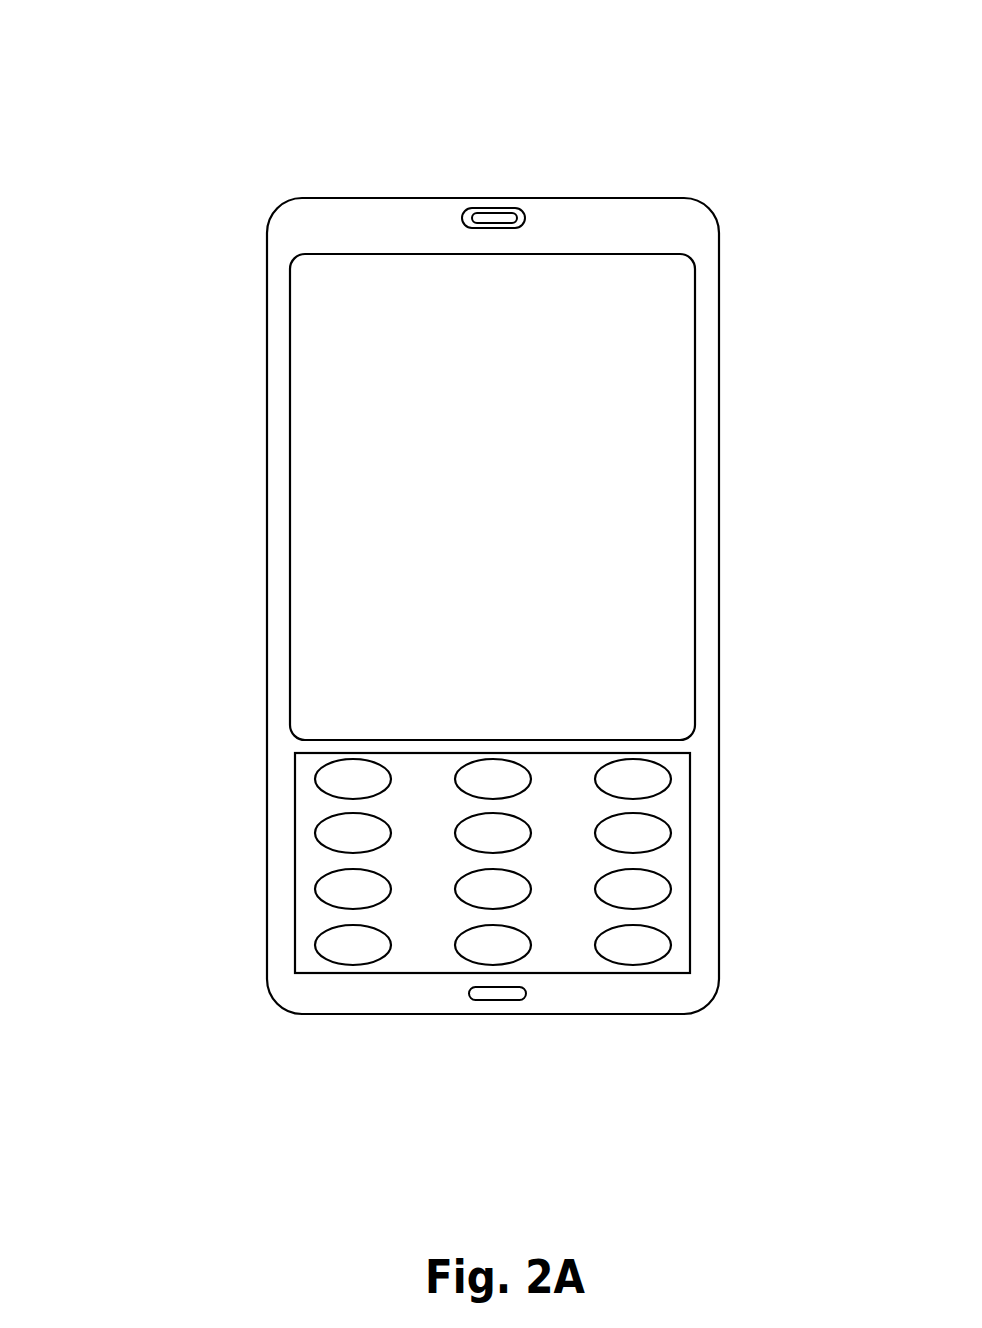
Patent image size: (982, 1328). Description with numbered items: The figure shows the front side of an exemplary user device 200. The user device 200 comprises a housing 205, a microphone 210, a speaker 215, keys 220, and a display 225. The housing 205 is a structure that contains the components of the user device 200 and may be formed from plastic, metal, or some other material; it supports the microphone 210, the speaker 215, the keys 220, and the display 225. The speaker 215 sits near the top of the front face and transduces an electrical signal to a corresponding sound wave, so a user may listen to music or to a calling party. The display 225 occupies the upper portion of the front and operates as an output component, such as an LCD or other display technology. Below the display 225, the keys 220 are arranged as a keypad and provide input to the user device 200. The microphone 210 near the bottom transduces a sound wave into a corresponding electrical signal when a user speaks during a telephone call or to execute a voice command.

The user device 200 is at (240, 62).
The housing 205 is at (267, 540).
The microphone 210 is at (515, 1001).
The speaker 215 is at (505, 207).
The keys 220 is at (731, 962).
The display 225 is at (678, 480).